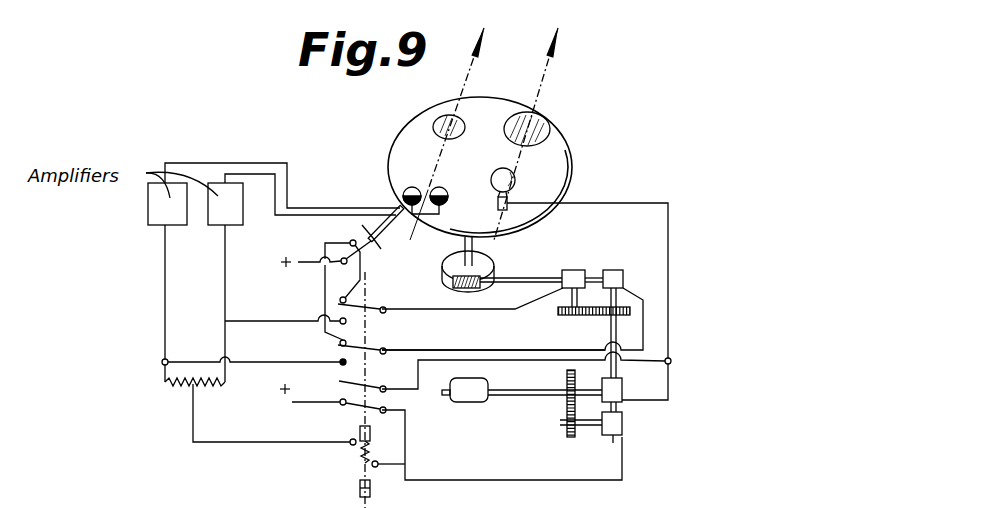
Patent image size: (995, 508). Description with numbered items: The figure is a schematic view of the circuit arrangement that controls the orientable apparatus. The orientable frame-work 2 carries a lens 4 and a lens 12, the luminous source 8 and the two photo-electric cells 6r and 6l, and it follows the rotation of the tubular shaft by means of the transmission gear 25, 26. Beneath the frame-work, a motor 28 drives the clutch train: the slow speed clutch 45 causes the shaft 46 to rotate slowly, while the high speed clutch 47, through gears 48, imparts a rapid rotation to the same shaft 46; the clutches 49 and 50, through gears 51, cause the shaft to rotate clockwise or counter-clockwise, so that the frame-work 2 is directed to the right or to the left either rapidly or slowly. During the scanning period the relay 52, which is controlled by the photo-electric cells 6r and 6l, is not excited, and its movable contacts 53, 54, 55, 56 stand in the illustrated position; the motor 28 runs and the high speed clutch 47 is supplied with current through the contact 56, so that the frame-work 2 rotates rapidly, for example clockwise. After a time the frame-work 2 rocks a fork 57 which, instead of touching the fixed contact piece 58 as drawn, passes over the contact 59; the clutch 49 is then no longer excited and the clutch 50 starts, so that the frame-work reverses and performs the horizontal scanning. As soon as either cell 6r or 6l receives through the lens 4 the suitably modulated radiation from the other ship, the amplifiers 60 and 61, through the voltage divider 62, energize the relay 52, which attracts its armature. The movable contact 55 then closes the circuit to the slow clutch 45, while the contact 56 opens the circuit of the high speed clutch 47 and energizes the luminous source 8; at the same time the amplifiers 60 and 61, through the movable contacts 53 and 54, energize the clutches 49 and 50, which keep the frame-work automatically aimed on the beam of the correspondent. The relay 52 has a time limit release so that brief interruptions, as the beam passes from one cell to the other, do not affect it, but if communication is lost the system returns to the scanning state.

The orientable frame-work 2 is at (494, 106).
The lens 4 is at (445, 115).
The lens 12 is at (540, 126).
The luminous source 8 is at (515, 177).
The photo-electric cell 6l is at (410, 187).
The photo-electric cell 6r is at (440, 187).
The transmission gear 25 is at (479, 262).
The transmission gear 26 is at (458, 285).
The clutch 49 is at (572, 278).
The clutch 50 is at (614, 277).
The gears 51 is at (562, 316).
The shaft 46 is at (610, 329).
The clutch 45 is at (618, 388).
The clutch 47 is at (618, 421).
The gears 48 is at (566, 409).
The motor 28 is at (478, 398).
The fork 57 is at (381, 249).
The fixed contact piece 58 is at (366, 252).
The contact 59 is at (350, 241).
The movable contact 53 is at (370, 303).
The movable contact 54 is at (372, 348).
The movable contact 55 is at (372, 387).
The movable contact 56 is at (346, 406).
The relay 52 is at (362, 456).
The amplifier 60 is at (158, 222).
The amplifier 61 is at (216, 222).
The voltage divider 62 is at (193, 372).